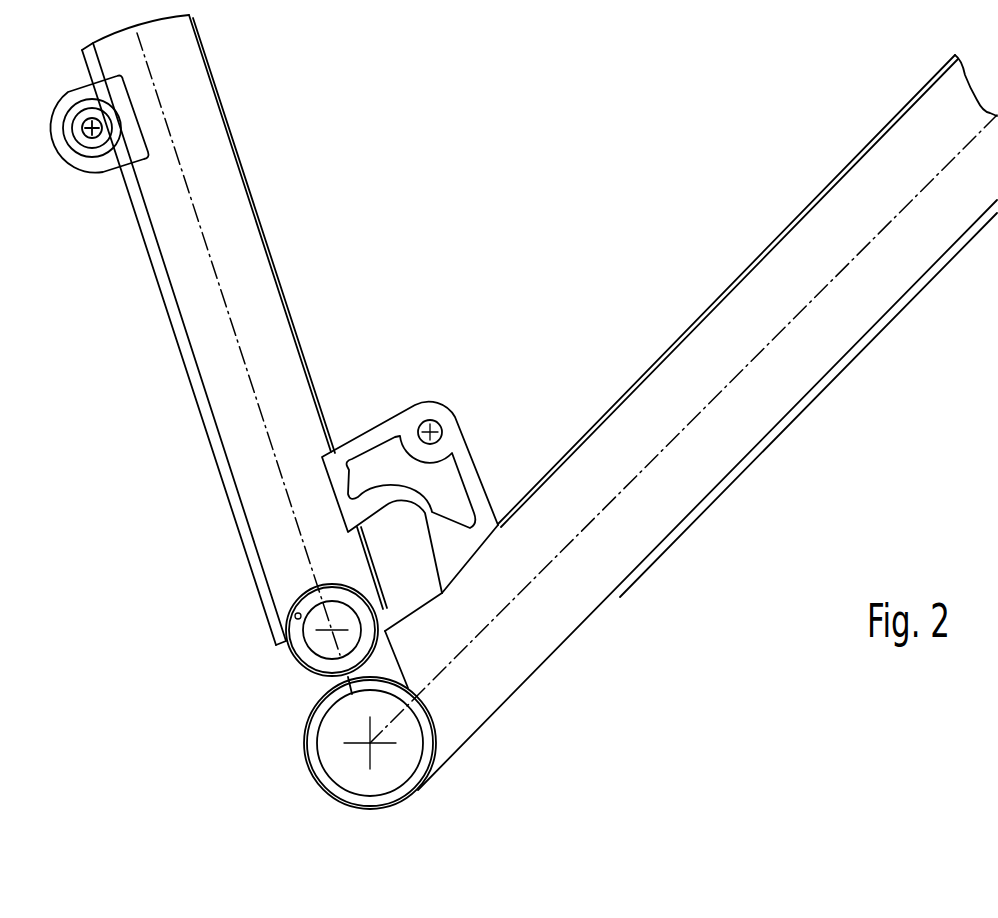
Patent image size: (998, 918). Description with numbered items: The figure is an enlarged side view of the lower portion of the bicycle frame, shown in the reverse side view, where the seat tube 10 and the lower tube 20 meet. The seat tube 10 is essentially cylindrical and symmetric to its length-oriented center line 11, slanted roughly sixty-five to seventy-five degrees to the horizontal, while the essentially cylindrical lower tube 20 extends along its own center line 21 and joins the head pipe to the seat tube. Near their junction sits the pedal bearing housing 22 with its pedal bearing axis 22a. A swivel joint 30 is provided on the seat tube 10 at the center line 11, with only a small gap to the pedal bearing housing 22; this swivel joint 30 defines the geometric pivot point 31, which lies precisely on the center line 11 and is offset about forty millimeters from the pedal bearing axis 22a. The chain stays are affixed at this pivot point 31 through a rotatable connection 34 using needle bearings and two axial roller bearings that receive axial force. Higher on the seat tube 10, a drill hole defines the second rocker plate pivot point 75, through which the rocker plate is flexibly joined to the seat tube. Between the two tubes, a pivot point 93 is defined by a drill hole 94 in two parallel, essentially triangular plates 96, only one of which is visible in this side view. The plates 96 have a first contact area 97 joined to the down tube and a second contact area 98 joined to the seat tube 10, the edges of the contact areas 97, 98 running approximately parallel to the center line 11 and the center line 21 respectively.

The seat tube 10 is at (230, 186).
The center line 11 is at (222, 243).
The lower tube 20 is at (697, 335).
The center line 21 is at (693, 396).
The pedal bearing housing 22 is at (320, 778).
The pedal bearing axis 22a is at (370, 743).
The swivel joint 30 is at (297, 648).
The pivot point 31 is at (332, 632).
The rotatable connection 34 is at (252, 619).
The second rocker plate pivot point 75 is at (88, 133).
The pivot point 93 is at (441, 425).
The drill hole 94 is at (421, 427).
The plates 96 is at (473, 483).
The first contact area 97 is at (470, 567).
The second contact area 98 is at (331, 487).